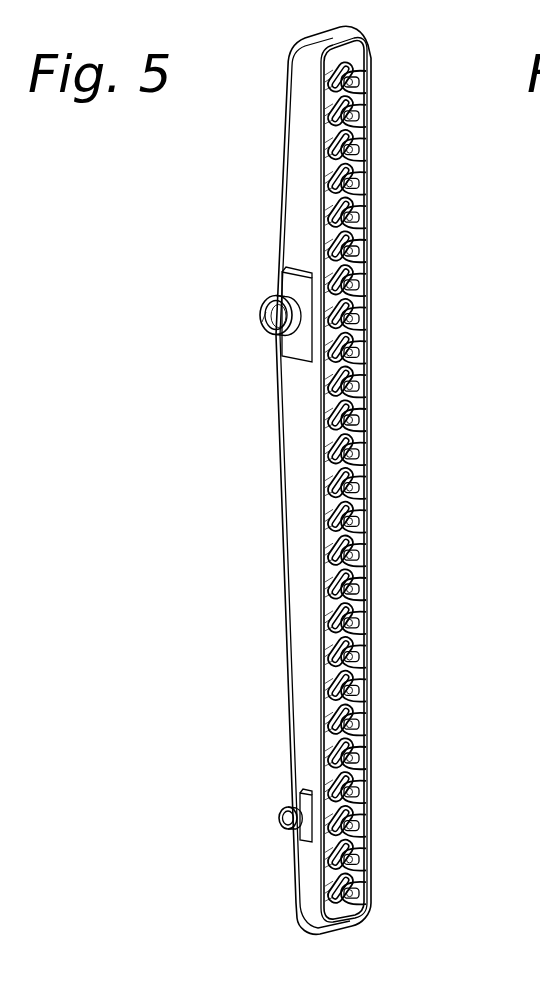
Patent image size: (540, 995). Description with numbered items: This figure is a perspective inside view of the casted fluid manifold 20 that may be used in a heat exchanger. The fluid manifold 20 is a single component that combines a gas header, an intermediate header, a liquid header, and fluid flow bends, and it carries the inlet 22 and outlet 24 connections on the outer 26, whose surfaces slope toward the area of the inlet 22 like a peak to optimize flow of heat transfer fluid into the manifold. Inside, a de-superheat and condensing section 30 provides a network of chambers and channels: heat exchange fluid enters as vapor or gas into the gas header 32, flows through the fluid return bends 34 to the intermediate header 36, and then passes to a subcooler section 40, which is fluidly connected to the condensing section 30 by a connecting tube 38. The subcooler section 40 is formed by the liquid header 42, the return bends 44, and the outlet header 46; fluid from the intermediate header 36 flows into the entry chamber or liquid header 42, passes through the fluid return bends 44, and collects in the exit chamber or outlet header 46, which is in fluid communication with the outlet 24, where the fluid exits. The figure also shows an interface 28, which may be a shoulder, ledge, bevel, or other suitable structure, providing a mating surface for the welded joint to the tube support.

The fluid manifold 20 is at (183, 266).
The inlet 22 is at (272, 314).
The outlet 24 is at (283, 817).
The outer 26 is at (278, 455).
The interface 28 is at (323, 537).
The de-superheat and condensing section 30 is at (355, 479).
The gas header 32 is at (364, 140).
The fluid return bends 34 is at (327, 233).
The intermediate header 36 is at (330, 140).
The connecting tube 38 is at (332, 781).
The subcooler section 40 is at (400, 880).
The liquid header 42 is at (363, 848).
The fluid return bends 44 is at (366, 813).
The outlet header 46 is at (330, 877).